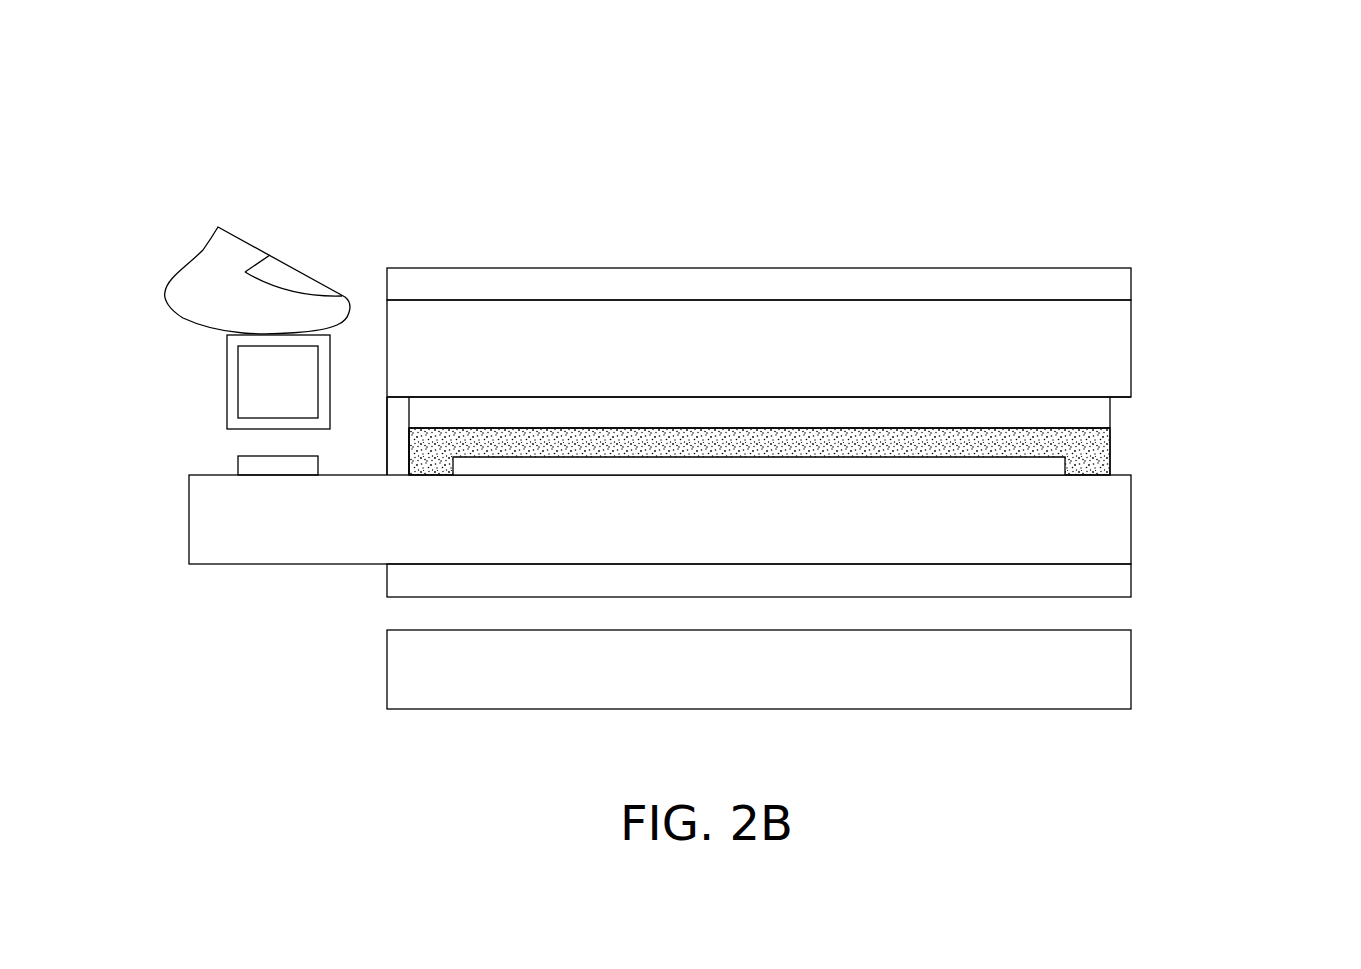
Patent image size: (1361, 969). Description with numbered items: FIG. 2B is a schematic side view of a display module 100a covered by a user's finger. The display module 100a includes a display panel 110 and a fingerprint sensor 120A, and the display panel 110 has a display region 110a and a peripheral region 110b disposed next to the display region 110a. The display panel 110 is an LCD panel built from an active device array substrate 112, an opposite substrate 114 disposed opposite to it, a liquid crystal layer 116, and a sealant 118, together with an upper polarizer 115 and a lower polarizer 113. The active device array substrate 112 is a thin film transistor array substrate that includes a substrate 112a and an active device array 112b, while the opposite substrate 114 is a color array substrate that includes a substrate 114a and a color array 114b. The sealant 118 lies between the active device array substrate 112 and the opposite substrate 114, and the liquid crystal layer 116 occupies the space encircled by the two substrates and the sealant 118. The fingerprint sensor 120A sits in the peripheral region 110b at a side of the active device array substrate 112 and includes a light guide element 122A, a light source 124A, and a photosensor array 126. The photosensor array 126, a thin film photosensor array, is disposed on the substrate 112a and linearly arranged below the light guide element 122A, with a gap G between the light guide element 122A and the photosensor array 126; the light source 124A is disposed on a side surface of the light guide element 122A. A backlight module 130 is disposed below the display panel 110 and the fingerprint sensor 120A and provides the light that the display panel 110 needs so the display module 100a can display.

The display module 100a is at (1097, 153).
The display region 110a is at (1131, 207).
The peripheral region 110b is at (380, 207).
The display panel 110 is at (1300, 377).
The upper polarizer 115 is at (1122, 285).
The opposite substrate 114 is at (1245, 348).
The substrate 114a is at (1108, 360).
The color array 114b is at (1093, 413).
The liquid crystal layer 116 is at (1108, 437).
The active device array substrate 112 is at (1246, 463).
The active device array 112b is at (1110, 458).
The substrate 112a is at (1113, 515).
The lower polarizer 113 is at (1117, 580).
The backlight module 130 is at (1117, 663).
The sealant 118 is at (397, 463).
The fingerprint sensor 120A is at (128, 343).
The light guide element 122A is at (235, 367).
The light source 124A is at (268, 393).
The photosensor array 126 is at (247, 466).
The gap G is at (345, 429).